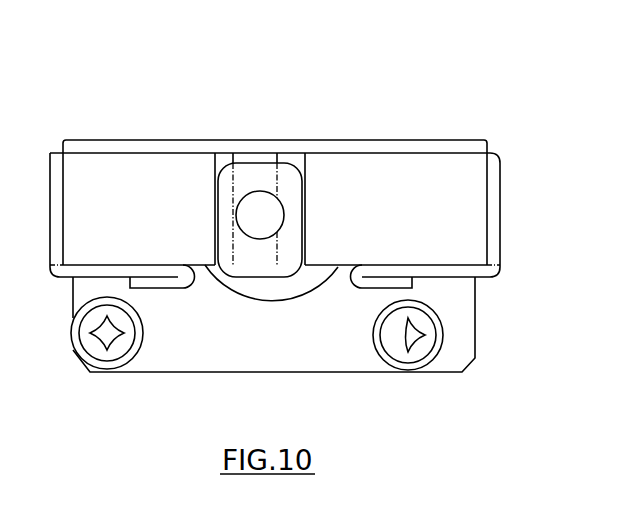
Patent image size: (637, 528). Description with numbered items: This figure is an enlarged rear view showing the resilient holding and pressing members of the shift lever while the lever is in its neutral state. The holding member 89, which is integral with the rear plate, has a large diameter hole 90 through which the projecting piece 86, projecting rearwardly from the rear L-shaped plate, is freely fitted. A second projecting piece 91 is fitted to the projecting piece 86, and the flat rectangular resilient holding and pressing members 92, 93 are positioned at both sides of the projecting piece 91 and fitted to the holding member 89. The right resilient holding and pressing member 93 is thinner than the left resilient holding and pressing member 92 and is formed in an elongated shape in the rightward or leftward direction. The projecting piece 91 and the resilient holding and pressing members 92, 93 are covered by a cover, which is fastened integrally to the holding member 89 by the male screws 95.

The projecting piece 86 is at (258, 228).
The holding member 89 is at (375, 141).
The large diameter hole 90 is at (301, 299).
The projecting piece 91 is at (258, 173).
The left resilient holding and pressing member 92 is at (122, 180).
The right resilient holding and pressing member 93 is at (440, 177).
The male screws 95 is at (114, 349).